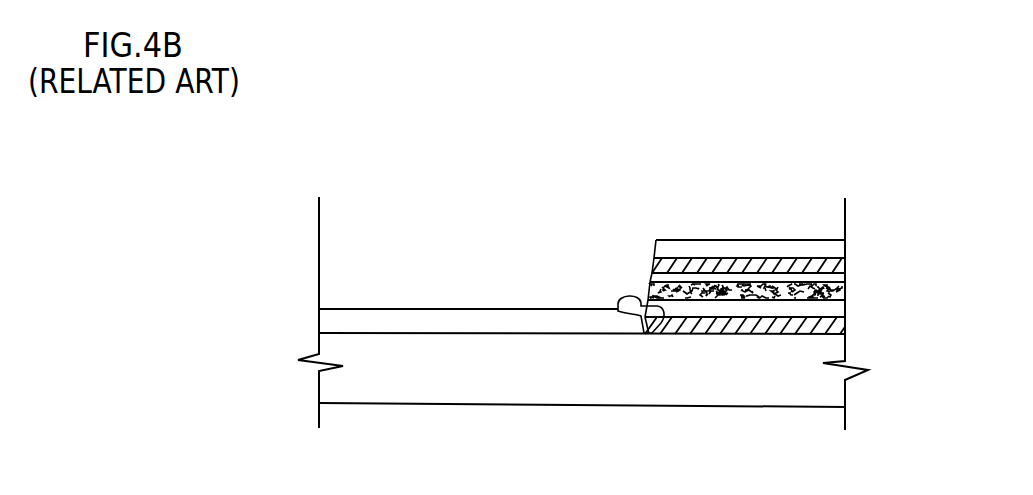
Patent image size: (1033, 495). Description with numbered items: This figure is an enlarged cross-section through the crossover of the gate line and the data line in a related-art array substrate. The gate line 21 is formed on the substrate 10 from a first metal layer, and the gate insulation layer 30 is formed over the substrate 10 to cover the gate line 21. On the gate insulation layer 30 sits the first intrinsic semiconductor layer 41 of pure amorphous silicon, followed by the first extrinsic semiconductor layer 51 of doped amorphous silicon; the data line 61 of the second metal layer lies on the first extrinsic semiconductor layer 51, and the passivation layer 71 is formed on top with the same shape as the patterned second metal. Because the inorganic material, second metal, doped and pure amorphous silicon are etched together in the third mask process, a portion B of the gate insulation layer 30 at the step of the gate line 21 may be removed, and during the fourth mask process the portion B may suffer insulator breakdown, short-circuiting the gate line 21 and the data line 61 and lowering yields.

The substrate 10 is at (580, 366).
The gate line 21 is at (760, 317).
The gate insulation layer 30 is at (820, 307).
The first intrinsic semiconductor layer 41 is at (781, 290).
The first extrinsic semiconductor layer 51 is at (731, 278).
The data line 61 is at (683, 265).
The passivation layer 71 is at (662, 248).
The portion B of the gate insulation layer B is at (626, 297).